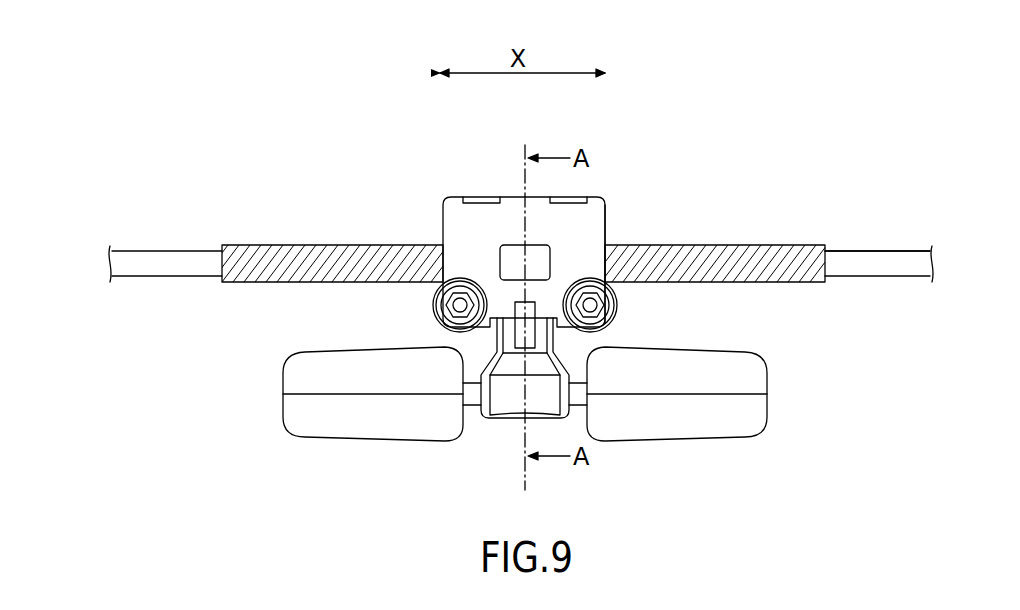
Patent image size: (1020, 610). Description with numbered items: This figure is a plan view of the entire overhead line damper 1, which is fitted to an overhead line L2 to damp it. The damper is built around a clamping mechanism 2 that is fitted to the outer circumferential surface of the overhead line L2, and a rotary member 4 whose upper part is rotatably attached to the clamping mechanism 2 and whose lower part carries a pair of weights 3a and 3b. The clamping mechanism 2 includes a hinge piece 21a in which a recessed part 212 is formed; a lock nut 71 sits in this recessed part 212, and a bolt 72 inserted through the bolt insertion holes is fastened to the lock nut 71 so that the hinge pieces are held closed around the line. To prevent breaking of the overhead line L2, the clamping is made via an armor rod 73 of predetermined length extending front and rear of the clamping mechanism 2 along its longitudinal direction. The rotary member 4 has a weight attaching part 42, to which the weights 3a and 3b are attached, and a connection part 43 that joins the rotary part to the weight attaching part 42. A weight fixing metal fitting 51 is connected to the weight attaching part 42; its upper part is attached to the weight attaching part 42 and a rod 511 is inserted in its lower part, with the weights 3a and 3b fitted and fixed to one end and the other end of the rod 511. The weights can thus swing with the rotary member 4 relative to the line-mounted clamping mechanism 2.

The overhead line damper 1 is at (227, 95).
The clamping mechanism 2 is at (653, 186).
The hinge piece 21a is at (605, 239).
The recessed part 212 is at (442, 262).
The weight 3a is at (700, 441).
The weight 3b is at (343, 441).
The rotary member 4 is at (563, 342).
The weight attaching part 42 is at (520, 348).
The connection part 43 is at (513, 302).
The weight fixing metal fitting 51 is at (572, 410).
The rod 511 is at (472, 407).
The lock nut 71 is at (433, 305).
The bolt 72 is at (455, 298).
The armor rod 73 is at (768, 245).
The overhead line L2 is at (878, 252).